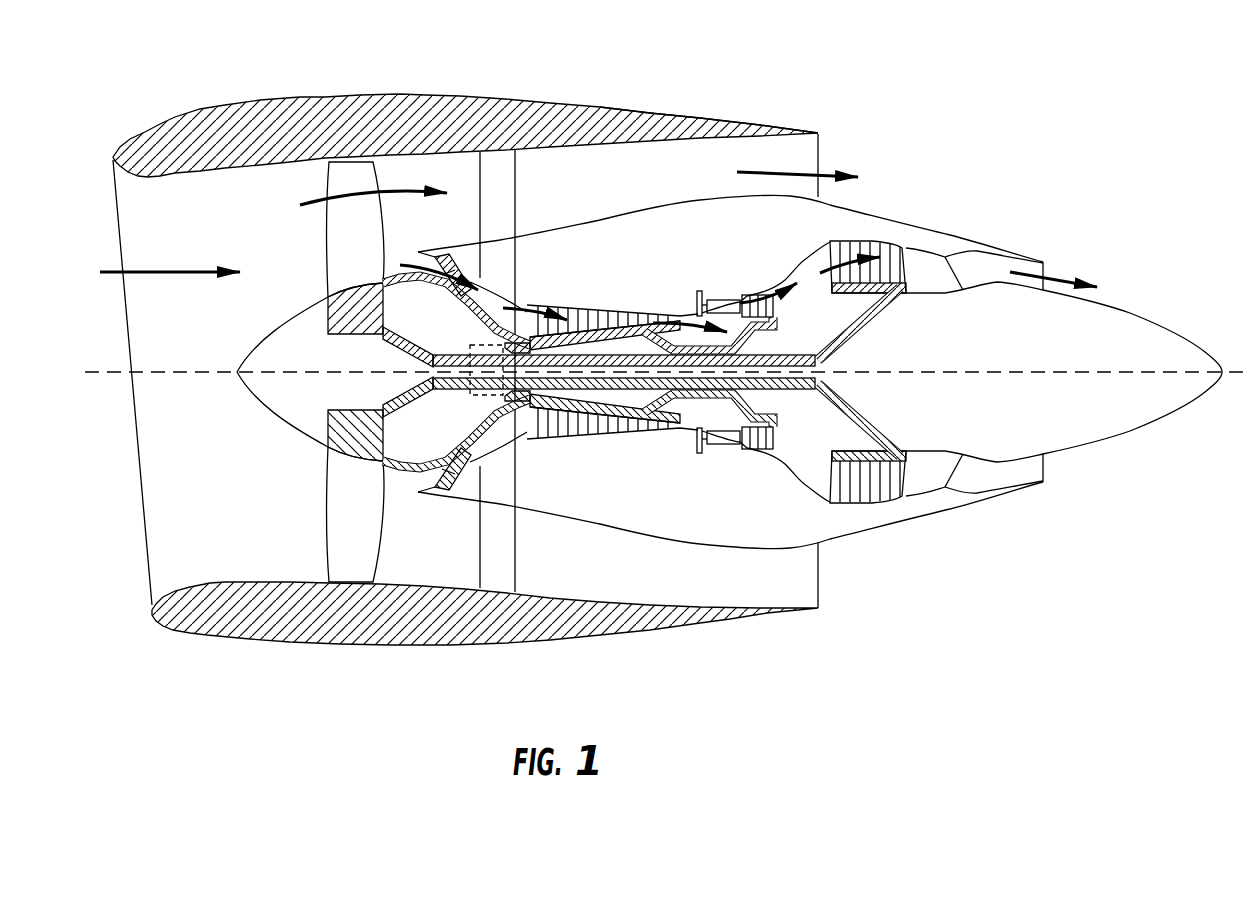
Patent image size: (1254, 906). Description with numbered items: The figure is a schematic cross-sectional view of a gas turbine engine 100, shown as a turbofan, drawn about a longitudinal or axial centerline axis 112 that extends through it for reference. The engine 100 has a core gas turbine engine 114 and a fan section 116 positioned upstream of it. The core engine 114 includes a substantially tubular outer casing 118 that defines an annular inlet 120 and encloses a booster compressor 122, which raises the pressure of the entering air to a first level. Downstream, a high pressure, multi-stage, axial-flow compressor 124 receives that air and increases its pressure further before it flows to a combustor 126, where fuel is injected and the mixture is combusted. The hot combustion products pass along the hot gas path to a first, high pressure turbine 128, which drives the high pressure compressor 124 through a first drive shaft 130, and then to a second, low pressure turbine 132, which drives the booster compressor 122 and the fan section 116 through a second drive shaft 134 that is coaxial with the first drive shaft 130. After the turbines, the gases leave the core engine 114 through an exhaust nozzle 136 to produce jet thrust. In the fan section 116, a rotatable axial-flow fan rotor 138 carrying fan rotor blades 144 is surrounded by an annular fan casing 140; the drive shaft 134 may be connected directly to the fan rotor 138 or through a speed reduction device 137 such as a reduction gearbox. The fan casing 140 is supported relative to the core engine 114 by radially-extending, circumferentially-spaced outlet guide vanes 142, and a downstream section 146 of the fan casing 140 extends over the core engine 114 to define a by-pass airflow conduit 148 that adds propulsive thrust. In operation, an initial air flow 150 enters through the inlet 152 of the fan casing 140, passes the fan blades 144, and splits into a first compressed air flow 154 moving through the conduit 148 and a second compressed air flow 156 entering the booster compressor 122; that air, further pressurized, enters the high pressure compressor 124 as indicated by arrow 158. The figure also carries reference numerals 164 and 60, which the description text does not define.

The gas turbine engine 100 is at (665, 374).
The longitudinal or axial centerline axis 112 is at (963, 367).
The core gas turbine engine 114 is at (668, 254).
The fan section 116 is at (368, 90).
The outer casing 118 is at (662, 540).
The annular inlet 120 is at (423, 478).
The booster compressor 122 is at (467, 460).
The high pressure compressor 124 is at (548, 432).
The combustor 126 is at (723, 432).
The first (high pressure) turbine 128 is at (787, 440).
The first (high pressure) drive shaft 130 is at (725, 338).
The second (low pressure) turbine 132 is at (968, 485).
The second (low pressure) drive shaft 134 is at (480, 347).
The exhaust nozzle 136 is at (1047, 264).
The speed reduction device 137 is at (493, 340).
The fan rotor 138 is at (383, 336).
The fan casing 140 is at (363, 642).
The outlet guide vanes 142 is at (517, 168).
The fan rotor blades 144 is at (326, 517).
The downstream section of the fan casing 146 is at (713, 120).
The by-pass airflow conduit 148 is at (662, 181).
The initial air flow 150 is at (170, 272).
The inlet of the fan casing 152 is at (145, 568).
The first compressed air flow 154 is at (338, 200).
The second compressed air flow 156 is at (400, 262).
The air flow entering the high-pressure compressor 158 is at (533, 302).
The fuel injector 164 is at (743, 300).
The turbine flowpath wall 60 is at (753, 288).